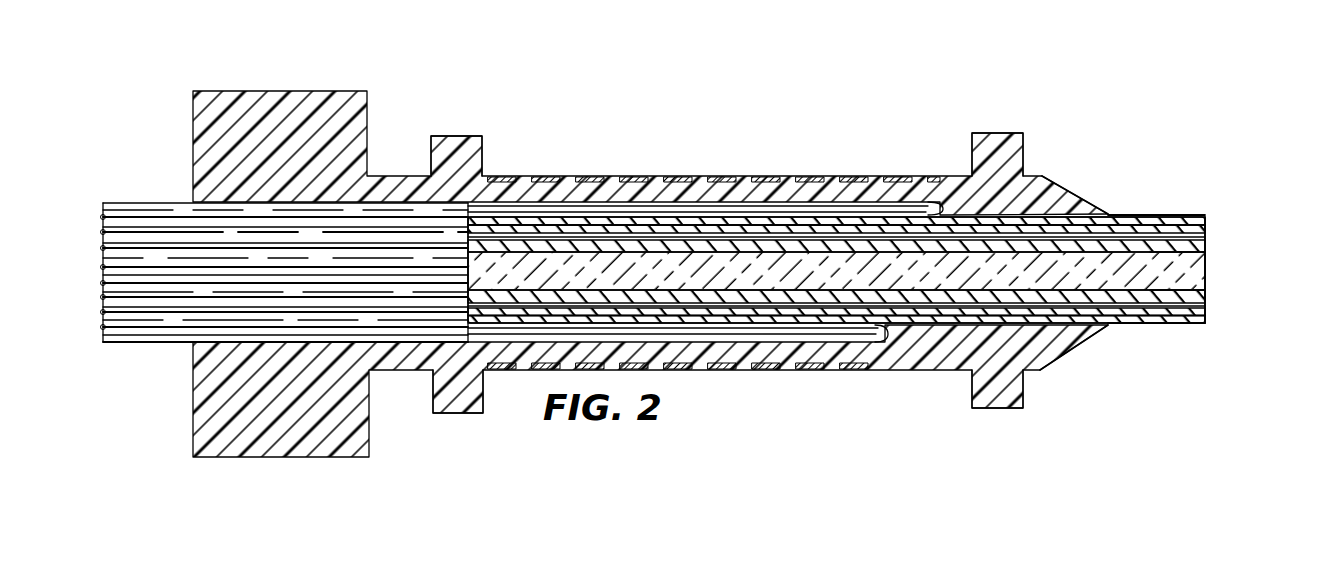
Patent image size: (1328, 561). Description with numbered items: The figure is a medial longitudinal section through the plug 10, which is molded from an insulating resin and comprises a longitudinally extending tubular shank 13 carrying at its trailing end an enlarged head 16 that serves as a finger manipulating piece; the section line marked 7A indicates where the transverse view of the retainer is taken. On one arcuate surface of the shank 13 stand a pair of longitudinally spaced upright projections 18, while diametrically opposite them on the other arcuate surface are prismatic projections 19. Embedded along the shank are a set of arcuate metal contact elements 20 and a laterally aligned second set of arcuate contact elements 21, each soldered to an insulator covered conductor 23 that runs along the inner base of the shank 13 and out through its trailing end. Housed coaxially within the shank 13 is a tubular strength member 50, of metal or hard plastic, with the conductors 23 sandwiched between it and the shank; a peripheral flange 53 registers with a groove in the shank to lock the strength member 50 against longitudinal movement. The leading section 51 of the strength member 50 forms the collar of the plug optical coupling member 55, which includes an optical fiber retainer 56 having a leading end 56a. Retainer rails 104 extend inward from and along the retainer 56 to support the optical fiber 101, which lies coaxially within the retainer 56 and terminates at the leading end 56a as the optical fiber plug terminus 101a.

The plug 10 is at (810, 144).
The tubular shank 13 is at (888, 392).
The enlarged head 16 is at (217, 158).
The upright projections 18 is at (470, 152).
The prismatic projections 19 is at (470, 390).
The arcuate metal contact elements 20 is at (606, 176).
The arcuate contact elements 21 is at (792, 368).
The insulator covered conductor 23 is at (158, 210).
The tubular strength member 50 is at (718, 232).
The leading section 51 is at (1165, 215).
The flange 53 is at (1025, 330).
The plug optical coupling member 55 is at (1292, 247).
The optical fiber retainer 56 is at (1183, 323).
The leading end 56a is at (1265, 206).
The optical fiber 101 is at (1202, 293).
The optical fiber plug terminus 101a is at (1296, 295).
The retainer rails 104 is at (1113, 243).
The section line 7A is at (538, 168).